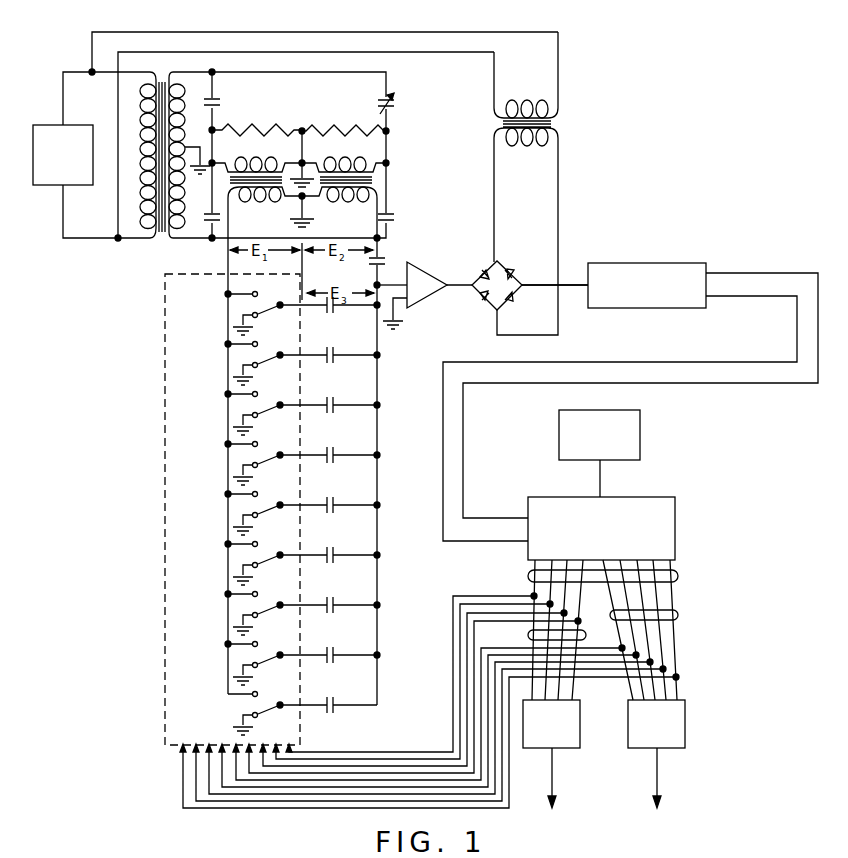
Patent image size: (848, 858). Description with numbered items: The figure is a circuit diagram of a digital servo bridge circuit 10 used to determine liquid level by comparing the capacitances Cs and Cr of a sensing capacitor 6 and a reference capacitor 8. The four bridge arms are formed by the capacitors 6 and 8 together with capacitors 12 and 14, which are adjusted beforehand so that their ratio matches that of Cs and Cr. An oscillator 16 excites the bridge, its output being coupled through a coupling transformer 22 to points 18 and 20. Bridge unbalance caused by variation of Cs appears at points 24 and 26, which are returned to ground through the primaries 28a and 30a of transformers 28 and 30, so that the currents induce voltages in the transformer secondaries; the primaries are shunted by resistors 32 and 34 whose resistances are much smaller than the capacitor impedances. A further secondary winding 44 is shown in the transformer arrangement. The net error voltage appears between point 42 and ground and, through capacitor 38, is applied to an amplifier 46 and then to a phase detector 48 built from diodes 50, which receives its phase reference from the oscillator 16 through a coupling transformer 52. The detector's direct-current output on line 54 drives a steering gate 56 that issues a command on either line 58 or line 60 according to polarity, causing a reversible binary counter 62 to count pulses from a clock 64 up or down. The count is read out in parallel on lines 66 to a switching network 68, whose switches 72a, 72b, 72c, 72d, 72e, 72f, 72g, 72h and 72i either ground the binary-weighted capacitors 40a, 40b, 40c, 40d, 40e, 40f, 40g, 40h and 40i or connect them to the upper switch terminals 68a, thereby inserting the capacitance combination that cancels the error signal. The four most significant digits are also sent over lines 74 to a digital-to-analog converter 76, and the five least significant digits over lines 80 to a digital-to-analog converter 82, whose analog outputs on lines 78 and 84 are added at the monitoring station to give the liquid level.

The sensing capacitor 6 is at (321, 156).
The reference capacitor 8 is at (220, 102).
The digital servo bridge circuit 10 is at (125, 422).
The capacitor 12 is at (395, 218).
The capacitor 14 is at (205, 226).
The oscillator 16 is at (58, 188).
The point 18 is at (214, 71).
The point 20 is at (213, 241).
The coupling transformer 22 is at (158, 238).
The point 24 is at (212, 130).
The point 26 is at (372, 181).
The transformer 28 is at (226, 181).
The primary 28a is at (280, 158).
The transformer 30 is at (382, 192).
The primary 30a is at (366, 164).
The resistor 32 is at (246, 129).
The resistor 34 is at (351, 129).
The capacitor 38 is at (386, 262).
The capacitor 40a is at (338, 709).
The capacitor 40b is at (340, 664).
The capacitor 40c is at (340, 614).
The capacitor 40d is at (340, 564).
The capacitor 40e is at (340, 514).
The capacitor 40f is at (340, 464).
The capacitor 40g is at (340, 414).
The capacitor 40h is at (340, 364).
The capacitor 40i is at (340, 314).
The point 42 is at (374, 284).
The transformer winding 44 is at (300, 198).
The amplifier 46 is at (426, 272).
The phase detector 48 is at (490, 284).
The diodes 50 is at (507, 300).
The coupling transformer 52 is at (562, 123).
The line 54 is at (540, 284).
The steering gate 56 is at (656, 263).
The line 58 is at (696, 387).
The line 60 is at (640, 362).
The reversible binary counter 62 is at (676, 527).
The clock 64 is at (641, 436).
The lines 66 is at (680, 575).
The switching network 68 is at (165, 496).
The upper switch terminals 68a is at (250, 292).
The switch 72a is at (280, 705).
The switch 72b is at (280, 655).
The switch 72c is at (280, 605).
The switch 72d is at (280, 555).
The switch 72e is at (280, 505).
The switch 72f is at (280, 455).
The switch 72g is at (280, 405).
The switch 72h is at (280, 355).
The switch 72i is at (280, 305).
The lines 74 is at (587, 635).
The digital-to-analog converter 76 is at (580, 740).
The line 78 is at (554, 779).
The lines 80 is at (680, 614).
The digital-to-analog converter 82 is at (686, 717).
The line 84 is at (659, 779).
The reference capacitance Cr is at (223, 106).
The sensing capacitance Cs is at (419, 129).